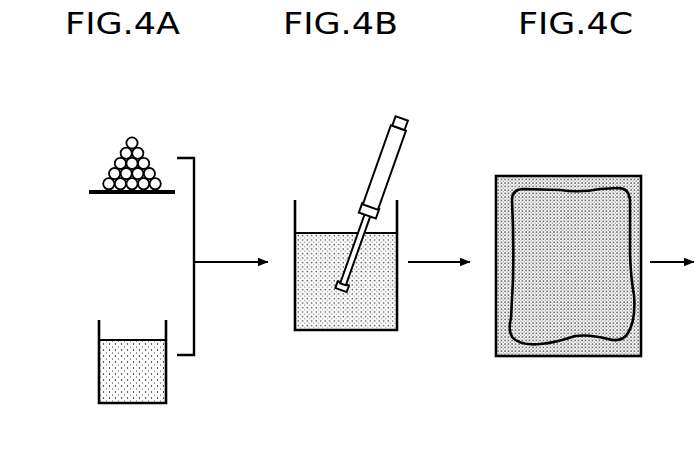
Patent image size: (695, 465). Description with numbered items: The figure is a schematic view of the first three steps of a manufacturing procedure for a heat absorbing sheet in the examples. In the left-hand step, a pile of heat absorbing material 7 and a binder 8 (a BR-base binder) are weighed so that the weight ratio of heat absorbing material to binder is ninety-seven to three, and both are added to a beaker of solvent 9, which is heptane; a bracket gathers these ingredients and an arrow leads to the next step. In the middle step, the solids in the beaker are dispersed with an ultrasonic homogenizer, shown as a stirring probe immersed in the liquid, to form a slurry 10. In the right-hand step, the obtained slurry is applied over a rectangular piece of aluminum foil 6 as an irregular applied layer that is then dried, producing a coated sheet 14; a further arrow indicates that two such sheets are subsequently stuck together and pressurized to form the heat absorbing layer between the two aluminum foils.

In FIG. 4A, the heat absorbing material 7 is at (175, 117).
In FIG. 4A, the solvent 9 is at (95, 334).
In FIG. 4A, the binder 8 is at (142, 327).
In FIG. 4B, the slurry 10 is at (339, 334).
In FIG. 4C, the aluminum foil 6 is at (564, 175).
In FIG. 4C, the sheet 14 is at (560, 320).